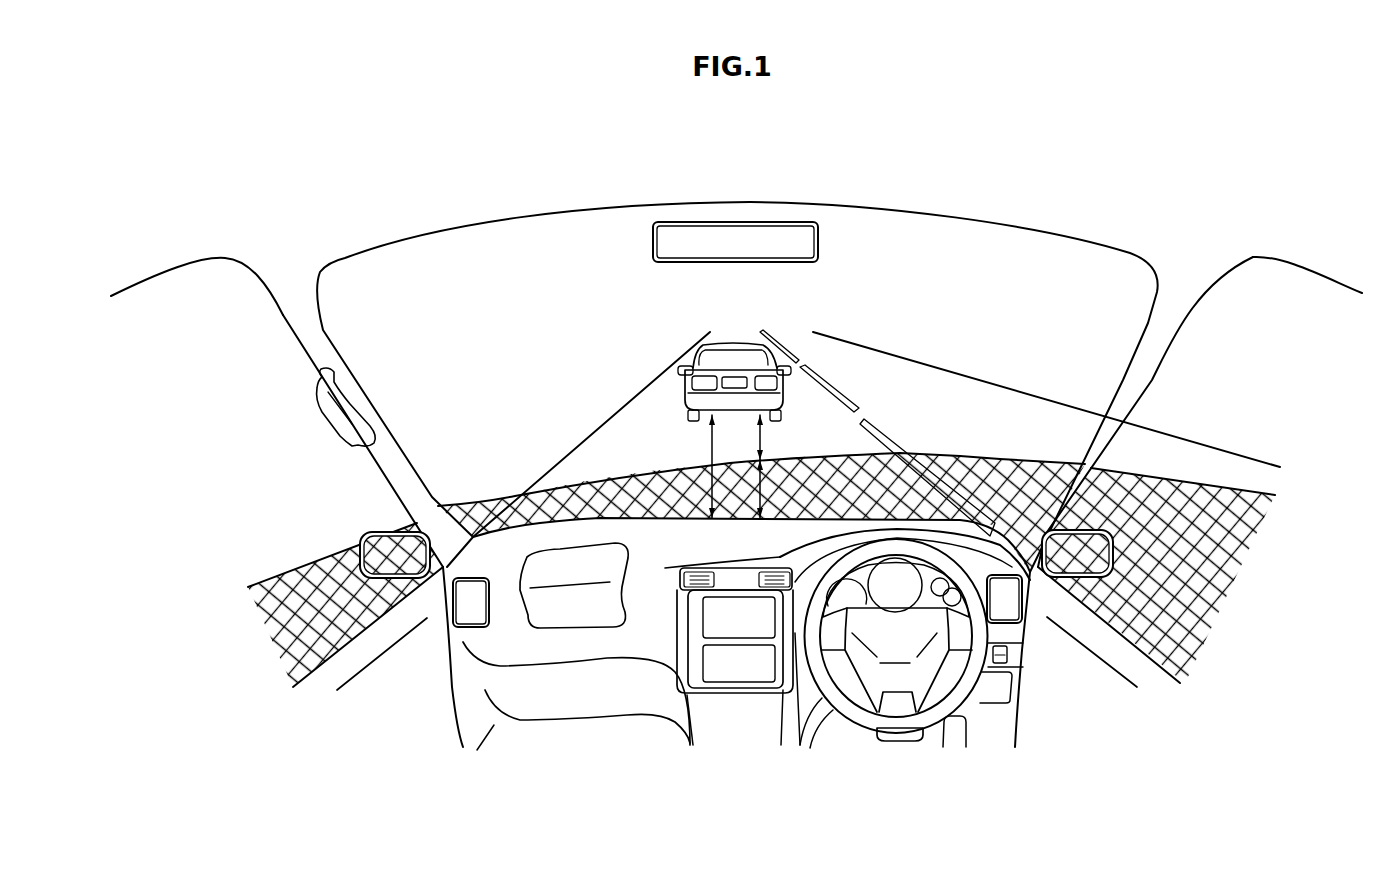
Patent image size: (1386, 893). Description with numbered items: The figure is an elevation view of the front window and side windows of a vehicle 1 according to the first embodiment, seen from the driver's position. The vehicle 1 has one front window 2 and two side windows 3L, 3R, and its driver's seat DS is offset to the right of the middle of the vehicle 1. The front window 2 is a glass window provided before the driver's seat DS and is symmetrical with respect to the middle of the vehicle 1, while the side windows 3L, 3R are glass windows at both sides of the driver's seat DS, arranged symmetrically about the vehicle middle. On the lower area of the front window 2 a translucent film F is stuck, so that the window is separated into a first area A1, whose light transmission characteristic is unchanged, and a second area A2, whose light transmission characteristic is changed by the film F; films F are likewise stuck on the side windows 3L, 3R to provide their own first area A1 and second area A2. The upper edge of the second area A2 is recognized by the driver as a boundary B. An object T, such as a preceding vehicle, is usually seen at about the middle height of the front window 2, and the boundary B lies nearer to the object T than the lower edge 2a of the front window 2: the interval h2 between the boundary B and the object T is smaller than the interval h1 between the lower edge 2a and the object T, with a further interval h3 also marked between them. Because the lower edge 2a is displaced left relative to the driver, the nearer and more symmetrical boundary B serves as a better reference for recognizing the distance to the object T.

The vehicle 1 is at (957, 165).
The front window 2 is at (460, 257).
The lower edge of the front window 2a is at (514, 496).
The left side window 3L is at (197, 300).
The right side window 3R is at (1300, 303).
The first area A1 is at (1242, 195).
The second area A2 is at (335, 635).
The boundary B is at (577, 483).
The translucent film F is at (1132, 490).
The object T is at (733, 343).
The interval between the lower edge and the object h1 is at (696, 466).
The interval between the boundary and the object h2 is at (777, 437).
The height h3 is at (773, 492).
The driver's seat DS is at (982, 730).